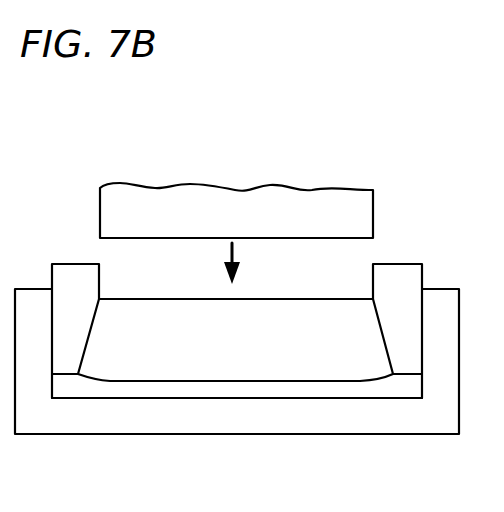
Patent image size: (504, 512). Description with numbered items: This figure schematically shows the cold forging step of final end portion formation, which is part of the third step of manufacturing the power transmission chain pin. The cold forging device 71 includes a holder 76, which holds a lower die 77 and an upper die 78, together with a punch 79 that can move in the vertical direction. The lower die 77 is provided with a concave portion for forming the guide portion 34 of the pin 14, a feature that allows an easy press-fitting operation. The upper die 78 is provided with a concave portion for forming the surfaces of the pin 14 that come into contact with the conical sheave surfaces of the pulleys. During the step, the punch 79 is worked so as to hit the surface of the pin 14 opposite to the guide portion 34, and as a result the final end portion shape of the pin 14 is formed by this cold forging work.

The pin 14 is at (339, 309).
The guide portion 34 is at (380, 378).
The cold forging device 71 is at (441, 274).
The holder 76 is at (146, 415).
The lower die 77 is at (282, 391).
The upper die 78 is at (68, 276).
The punch 79 is at (312, 203).